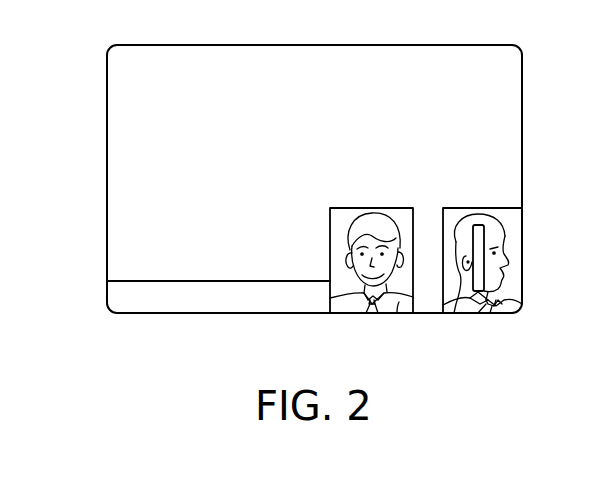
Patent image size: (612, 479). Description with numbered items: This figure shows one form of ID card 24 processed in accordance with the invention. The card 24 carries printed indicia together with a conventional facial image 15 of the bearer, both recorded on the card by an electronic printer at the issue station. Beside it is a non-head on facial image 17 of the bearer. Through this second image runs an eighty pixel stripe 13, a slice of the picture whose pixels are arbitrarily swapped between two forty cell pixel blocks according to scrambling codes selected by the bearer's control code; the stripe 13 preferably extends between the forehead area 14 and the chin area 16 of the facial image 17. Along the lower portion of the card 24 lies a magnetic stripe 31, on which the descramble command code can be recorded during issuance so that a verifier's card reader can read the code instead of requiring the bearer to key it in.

The card 24 is at (107, 176).
The magnetic stripe 31 is at (157, 291).
The pixel stripe 13 is at (484, 244).
The forehead area 14 is at (484, 226).
The conventional facial image 15 is at (397, 306).
The chin area 16 is at (481, 306).
The non-head on facial image 17 is at (462, 306).